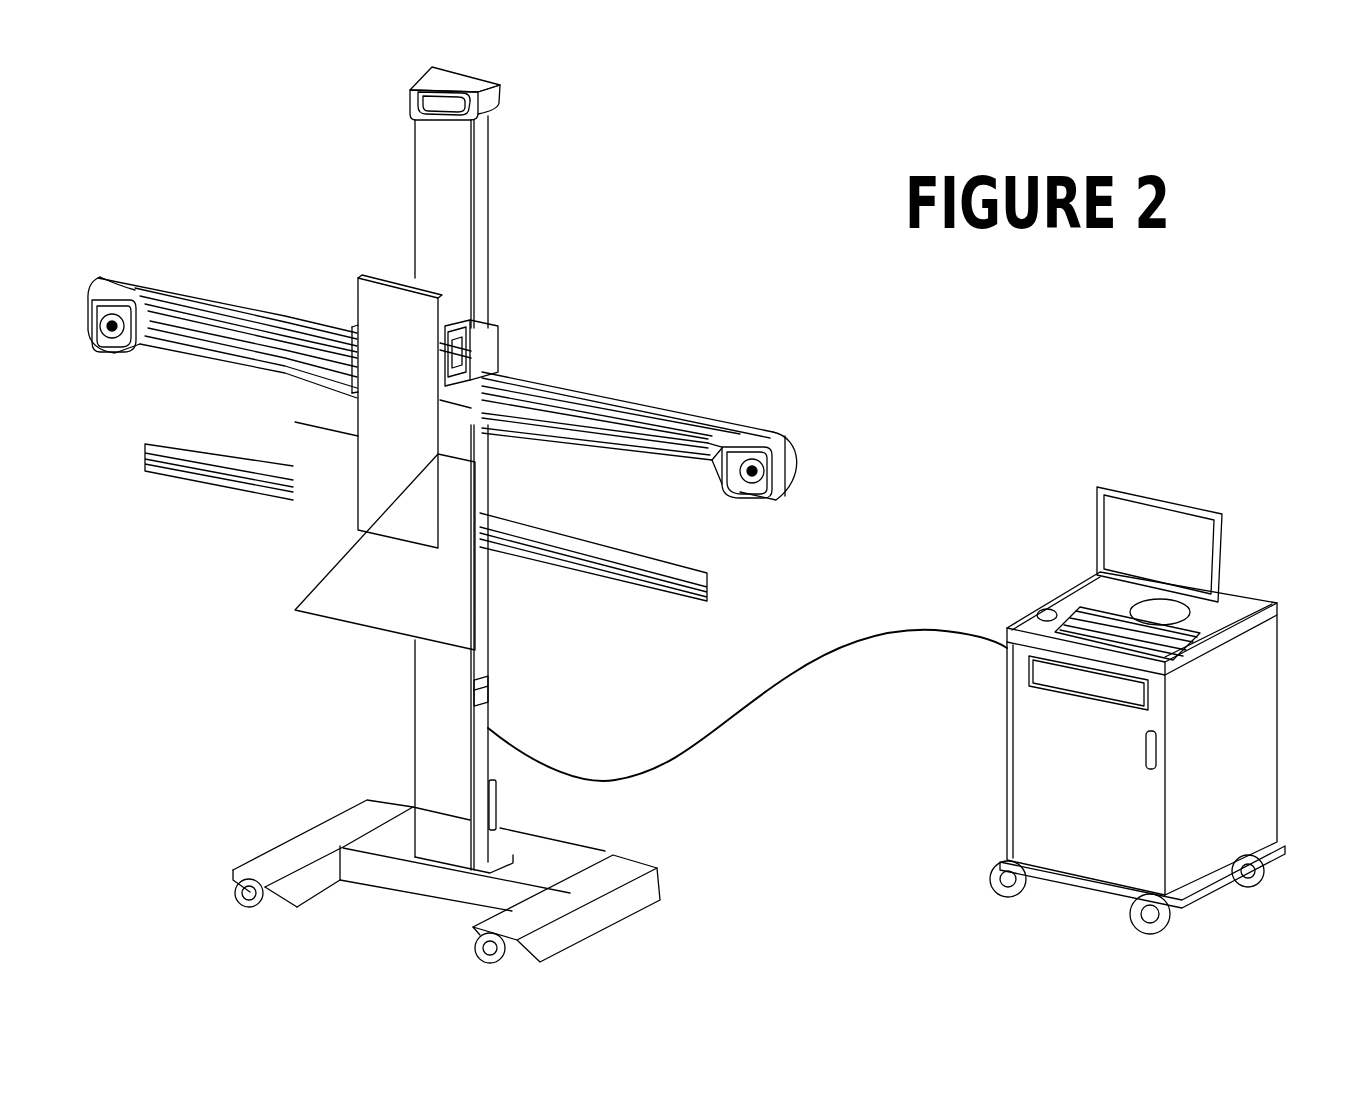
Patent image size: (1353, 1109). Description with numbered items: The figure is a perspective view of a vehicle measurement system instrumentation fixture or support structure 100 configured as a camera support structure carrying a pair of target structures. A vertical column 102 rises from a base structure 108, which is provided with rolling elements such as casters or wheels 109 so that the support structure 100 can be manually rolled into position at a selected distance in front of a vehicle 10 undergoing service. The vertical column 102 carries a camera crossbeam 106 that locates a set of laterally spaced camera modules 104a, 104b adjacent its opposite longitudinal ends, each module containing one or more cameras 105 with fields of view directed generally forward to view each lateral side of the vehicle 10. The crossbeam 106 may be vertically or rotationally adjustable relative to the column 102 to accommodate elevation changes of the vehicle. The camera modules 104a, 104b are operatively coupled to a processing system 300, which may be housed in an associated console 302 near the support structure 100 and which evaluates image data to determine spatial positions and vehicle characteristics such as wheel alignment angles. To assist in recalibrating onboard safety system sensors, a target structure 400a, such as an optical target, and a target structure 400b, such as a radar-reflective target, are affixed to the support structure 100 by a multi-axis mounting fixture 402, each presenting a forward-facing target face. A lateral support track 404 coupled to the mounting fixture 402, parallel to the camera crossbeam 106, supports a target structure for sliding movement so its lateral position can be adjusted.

The vehicle 10 is at (861, 306).
The support structure 100 is at (519, 529).
The vertical column 102 is at (371, 468).
The camera module 104a is at (829, 448).
The camera module 104b is at (176, 282).
The camera 105 is at (492, 442).
The camera crossbeam 106 is at (435, 369).
The base structure 108 is at (385, 873).
The casters or wheels 109 is at (307, 935).
The processing system 300 is at (1054, 681).
The console 302 is at (1037, 753).
The target structure 400a is at (309, 555).
The target structure 400b is at (282, 436).
The multi-axis mounting fixture 402 is at (586, 314).
The lateral support track 404 is at (428, 566).